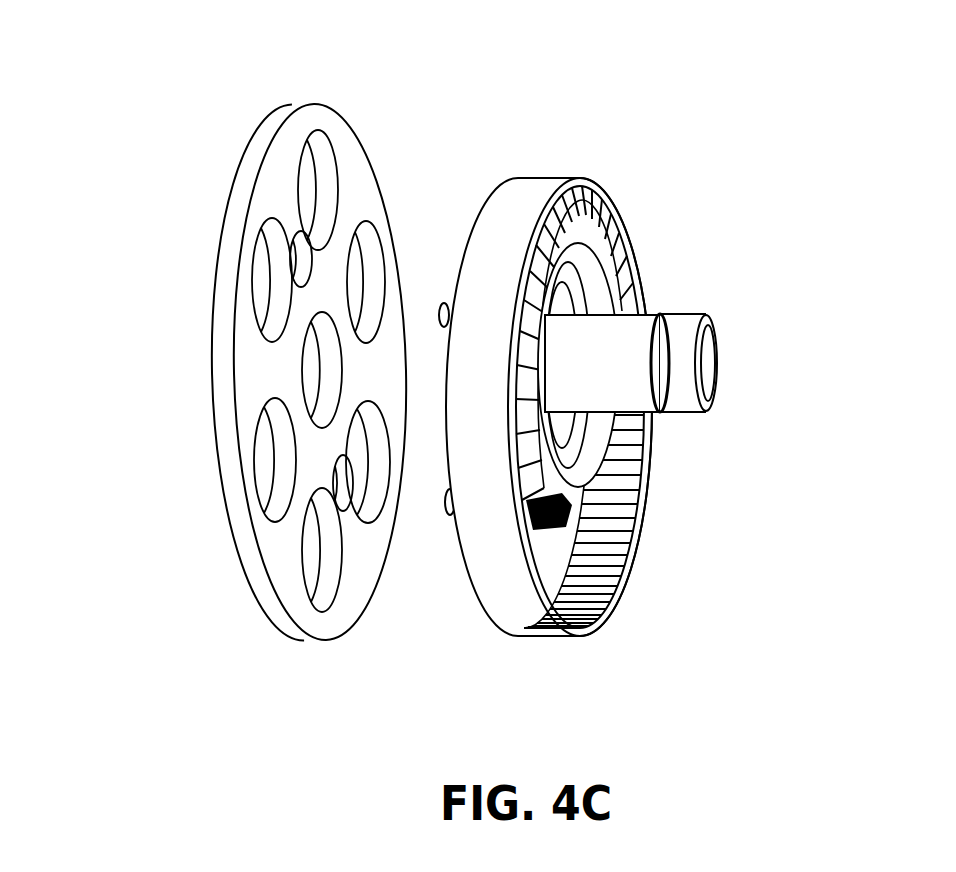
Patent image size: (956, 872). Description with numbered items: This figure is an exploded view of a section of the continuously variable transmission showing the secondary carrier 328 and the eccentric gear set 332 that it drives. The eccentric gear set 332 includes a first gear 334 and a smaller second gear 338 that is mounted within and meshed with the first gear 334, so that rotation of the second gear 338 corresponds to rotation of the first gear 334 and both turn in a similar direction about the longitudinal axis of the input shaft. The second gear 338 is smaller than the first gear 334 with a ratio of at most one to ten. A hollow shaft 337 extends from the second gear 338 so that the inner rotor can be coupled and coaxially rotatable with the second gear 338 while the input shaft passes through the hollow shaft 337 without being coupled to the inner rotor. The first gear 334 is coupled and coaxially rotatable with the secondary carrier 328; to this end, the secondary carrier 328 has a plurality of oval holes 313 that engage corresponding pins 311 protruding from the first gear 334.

The secondary carrier 328 is at (295, 103).
The oval holes 313 is at (260, 466).
The eccentric gear set 332 is at (583, 399).
The pins 311 is at (453, 515).
The first gear 334 is at (618, 613).
The second gear 338 is at (587, 489).
The hollow shaft 337 is at (681, 324).